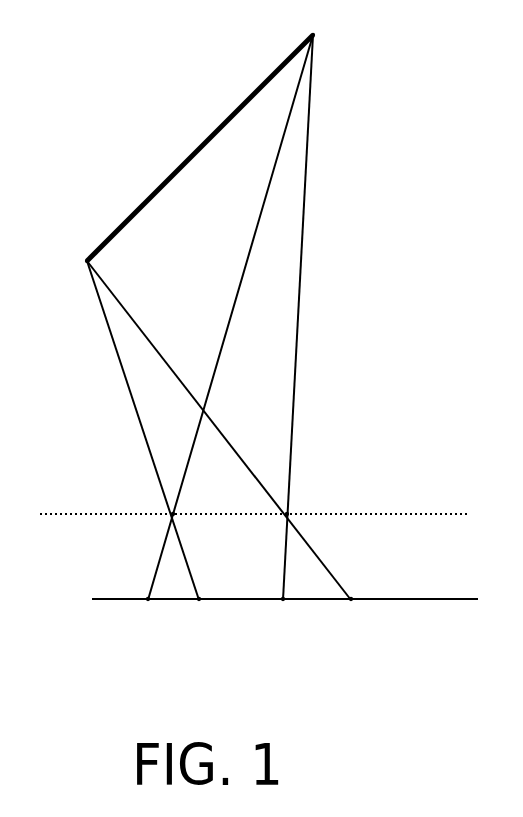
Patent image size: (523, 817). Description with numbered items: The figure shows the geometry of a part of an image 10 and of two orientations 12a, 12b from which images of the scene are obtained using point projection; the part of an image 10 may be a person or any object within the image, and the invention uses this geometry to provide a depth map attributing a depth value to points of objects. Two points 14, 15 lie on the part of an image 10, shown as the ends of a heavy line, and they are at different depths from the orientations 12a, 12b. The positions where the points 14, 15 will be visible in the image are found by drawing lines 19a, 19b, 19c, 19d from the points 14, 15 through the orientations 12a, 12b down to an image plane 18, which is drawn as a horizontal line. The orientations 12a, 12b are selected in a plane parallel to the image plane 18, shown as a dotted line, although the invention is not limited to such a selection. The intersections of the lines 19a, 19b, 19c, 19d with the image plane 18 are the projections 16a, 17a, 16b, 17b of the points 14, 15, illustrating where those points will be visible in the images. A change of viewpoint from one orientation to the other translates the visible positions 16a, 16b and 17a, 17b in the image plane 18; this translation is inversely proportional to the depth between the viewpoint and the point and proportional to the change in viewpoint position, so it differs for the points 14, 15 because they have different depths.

The part of an image 10 is at (131, 215).
The point on the part of an image 14 is at (84, 261).
The point on the part of an image 15 is at (312, 36).
The line 19a is at (121, 367).
The line 19b is at (135, 313).
The line 19c is at (222, 350).
The line 19d is at (305, 218).
The orientation 12a is at (171, 513).
The orientation 12b is at (290, 513).
The projection 16a is at (148, 600).
The projection 17a is at (199, 600).
The projection 16b is at (283, 600).
The projection 17b is at (351, 600).
The image plane 18 is at (448, 600).